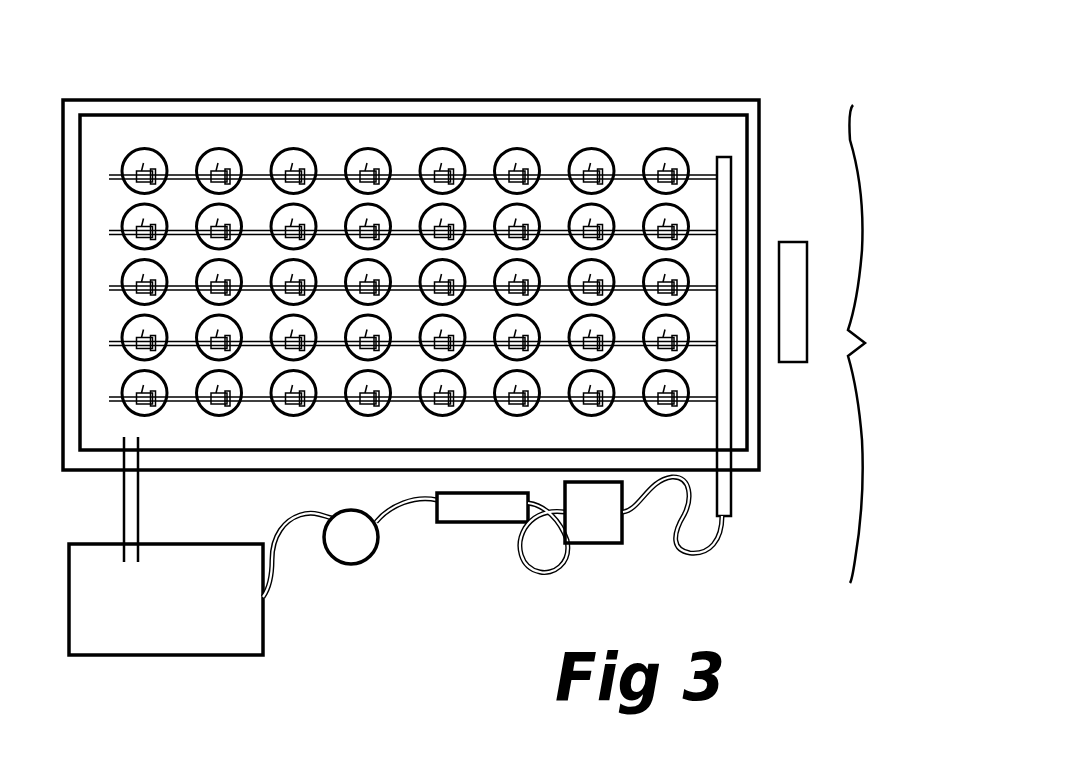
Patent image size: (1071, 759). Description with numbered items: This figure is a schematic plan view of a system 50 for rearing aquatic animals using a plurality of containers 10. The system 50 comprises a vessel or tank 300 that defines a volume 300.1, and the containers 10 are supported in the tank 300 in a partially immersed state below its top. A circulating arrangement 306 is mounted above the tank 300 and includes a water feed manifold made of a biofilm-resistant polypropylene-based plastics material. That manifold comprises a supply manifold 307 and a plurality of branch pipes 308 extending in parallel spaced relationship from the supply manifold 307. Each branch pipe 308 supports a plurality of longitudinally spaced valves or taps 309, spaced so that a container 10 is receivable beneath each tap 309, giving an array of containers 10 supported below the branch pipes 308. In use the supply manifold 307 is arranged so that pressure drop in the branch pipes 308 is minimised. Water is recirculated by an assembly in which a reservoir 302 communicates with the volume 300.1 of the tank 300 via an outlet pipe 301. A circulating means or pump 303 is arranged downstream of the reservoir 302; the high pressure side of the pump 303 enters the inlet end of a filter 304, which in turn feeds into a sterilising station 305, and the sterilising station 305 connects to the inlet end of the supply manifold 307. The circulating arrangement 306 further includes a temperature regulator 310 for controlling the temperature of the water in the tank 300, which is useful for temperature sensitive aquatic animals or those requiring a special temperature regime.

The tank 300 is at (132, 100).
The volume 300.1 is at (622, 143).
The container 10 is at (296, 150).
The tap 309 is at (363, 158).
The branch pipe 308 is at (473, 172).
The supply manifold 307 is at (731, 158).
The temperature regulator 310 is at (792, 242).
The system 50 is at (876, 344).
The outlet pipe 301 is at (124, 533).
The reservoir 302 is at (263, 620).
The pump 303 is at (343, 563).
The filter 304 is at (453, 525).
The sterilising station 305 is at (623, 542).
The circulating arrangement 306 is at (731, 485).